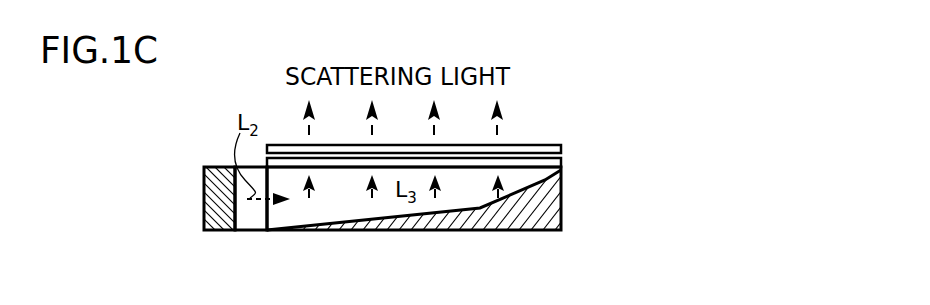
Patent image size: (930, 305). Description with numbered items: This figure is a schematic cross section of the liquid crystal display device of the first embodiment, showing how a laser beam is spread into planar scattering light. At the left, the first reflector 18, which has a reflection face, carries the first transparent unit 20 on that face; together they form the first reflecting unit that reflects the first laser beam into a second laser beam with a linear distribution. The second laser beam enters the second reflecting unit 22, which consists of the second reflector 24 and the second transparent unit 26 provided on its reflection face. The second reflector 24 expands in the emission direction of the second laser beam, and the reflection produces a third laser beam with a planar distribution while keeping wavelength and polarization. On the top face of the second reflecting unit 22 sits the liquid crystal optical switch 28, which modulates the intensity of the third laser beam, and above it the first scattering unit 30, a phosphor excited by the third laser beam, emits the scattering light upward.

The first reflector 18 is at (217, 226).
The first transparent unit 20 is at (241, 226).
The second reflecting unit 22 is at (590, 213).
The second reflector 24 is at (493, 222).
The second transparent unit 26 is at (341, 221).
The liquid crystal optical switch 28 is at (561, 161).
The first scattering unit 30 is at (561, 150).